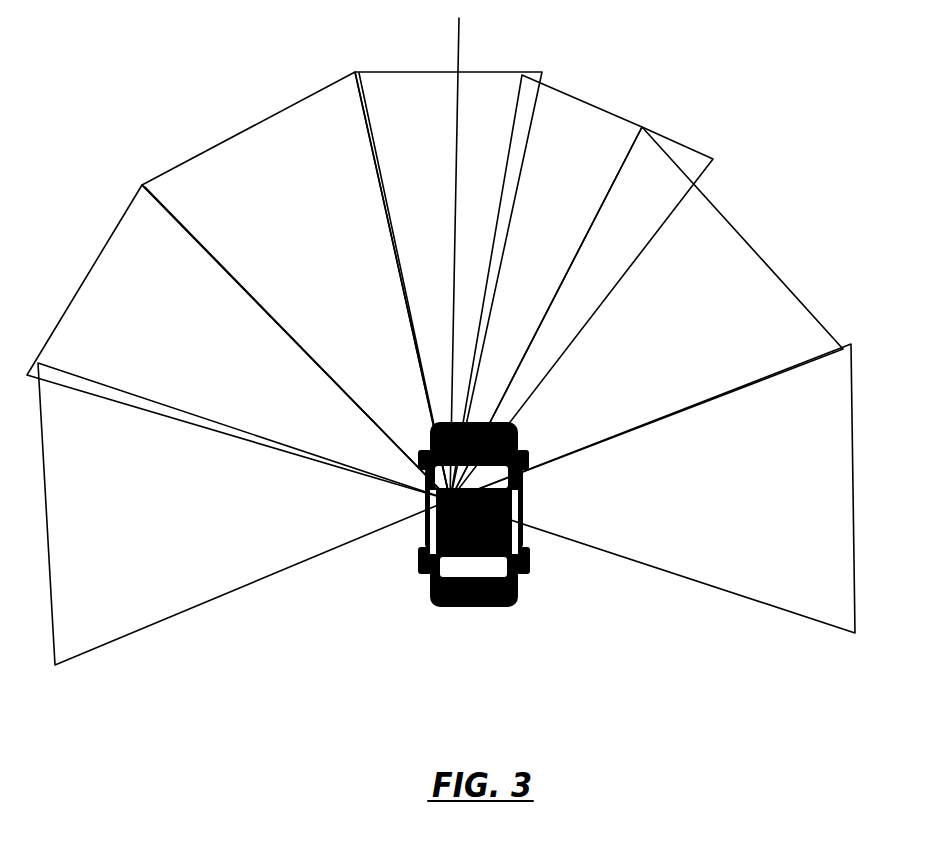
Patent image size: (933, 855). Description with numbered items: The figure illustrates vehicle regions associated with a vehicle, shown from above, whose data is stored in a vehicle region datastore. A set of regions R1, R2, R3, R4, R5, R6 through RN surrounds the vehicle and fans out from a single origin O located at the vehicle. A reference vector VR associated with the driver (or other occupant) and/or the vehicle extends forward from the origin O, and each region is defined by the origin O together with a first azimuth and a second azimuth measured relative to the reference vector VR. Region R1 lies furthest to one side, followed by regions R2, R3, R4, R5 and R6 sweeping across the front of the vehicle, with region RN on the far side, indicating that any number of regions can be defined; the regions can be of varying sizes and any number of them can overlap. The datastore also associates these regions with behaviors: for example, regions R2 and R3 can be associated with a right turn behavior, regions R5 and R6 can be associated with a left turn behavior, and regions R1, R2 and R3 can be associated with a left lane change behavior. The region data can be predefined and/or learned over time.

The region R1 is at (48, 538).
The region R2 is at (83, 278).
The region R3 is at (250, 128).
The region R4 is at (430, 71).
The region R5 is at (596, 101).
The region R6 is at (732, 226).
The region RN is at (853, 443).
The reference vector VR is at (456, 206).
The origin O is at (459, 18).